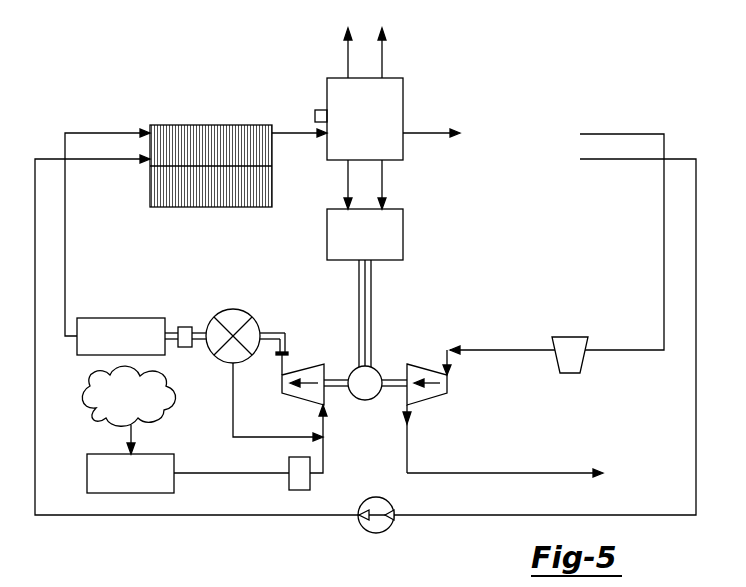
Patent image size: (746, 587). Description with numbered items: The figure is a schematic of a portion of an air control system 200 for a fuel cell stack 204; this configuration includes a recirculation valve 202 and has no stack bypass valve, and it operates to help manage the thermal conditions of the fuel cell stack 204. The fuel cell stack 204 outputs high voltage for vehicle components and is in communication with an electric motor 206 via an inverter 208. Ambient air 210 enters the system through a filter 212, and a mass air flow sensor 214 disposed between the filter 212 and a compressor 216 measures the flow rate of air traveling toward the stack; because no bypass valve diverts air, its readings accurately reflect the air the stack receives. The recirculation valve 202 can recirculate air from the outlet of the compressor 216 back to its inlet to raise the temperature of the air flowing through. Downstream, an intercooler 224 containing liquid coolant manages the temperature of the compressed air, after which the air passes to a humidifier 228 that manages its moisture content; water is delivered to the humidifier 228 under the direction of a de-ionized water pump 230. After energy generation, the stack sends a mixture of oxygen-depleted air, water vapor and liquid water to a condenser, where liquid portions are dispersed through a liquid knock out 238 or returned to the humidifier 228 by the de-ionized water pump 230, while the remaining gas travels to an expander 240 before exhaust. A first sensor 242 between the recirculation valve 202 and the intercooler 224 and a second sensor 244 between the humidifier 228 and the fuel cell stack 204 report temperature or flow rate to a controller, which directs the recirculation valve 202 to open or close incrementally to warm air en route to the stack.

The air control system 200 is at (584, 104).
The recirculation valve 202 is at (233, 309).
The fuel cell stack 204 is at (403, 88).
The electric motor 206 is at (375, 371).
The inverter 208 is at (403, 233).
The ambient air 210 is at (90, 378).
The filter 212 is at (130, 493).
The mass air flow sensor 214 is at (289, 479).
The compressor 216 is at (300, 404).
The intercooler 224 is at (122, 318).
The humidifier 228 is at (210, 125).
The de-ionized water pump 230 is at (370, 533).
The liquid knock out 238 is at (571, 337).
The expander 240 is at (413, 406).
The first sensor 242 is at (184, 327).
The second sensor 244 is at (320, 110).